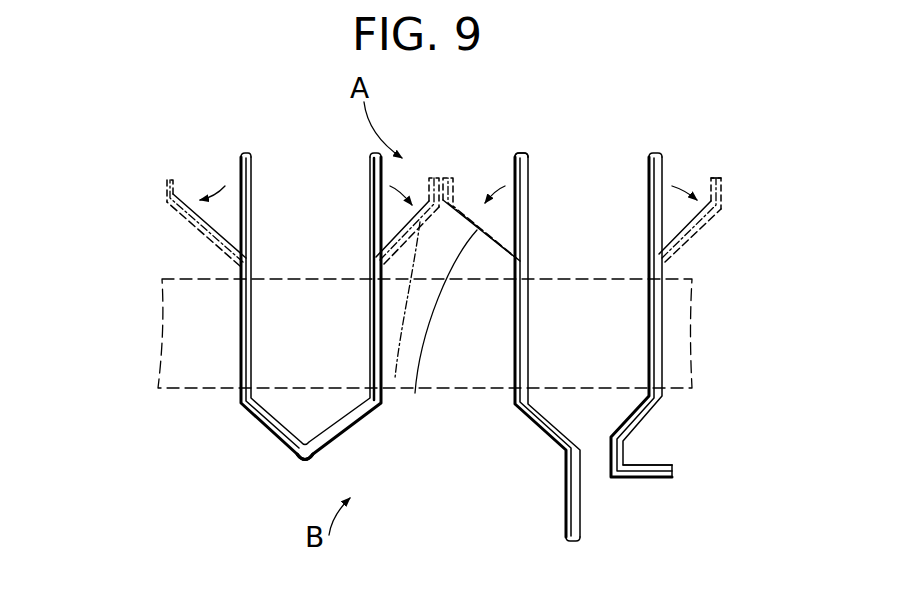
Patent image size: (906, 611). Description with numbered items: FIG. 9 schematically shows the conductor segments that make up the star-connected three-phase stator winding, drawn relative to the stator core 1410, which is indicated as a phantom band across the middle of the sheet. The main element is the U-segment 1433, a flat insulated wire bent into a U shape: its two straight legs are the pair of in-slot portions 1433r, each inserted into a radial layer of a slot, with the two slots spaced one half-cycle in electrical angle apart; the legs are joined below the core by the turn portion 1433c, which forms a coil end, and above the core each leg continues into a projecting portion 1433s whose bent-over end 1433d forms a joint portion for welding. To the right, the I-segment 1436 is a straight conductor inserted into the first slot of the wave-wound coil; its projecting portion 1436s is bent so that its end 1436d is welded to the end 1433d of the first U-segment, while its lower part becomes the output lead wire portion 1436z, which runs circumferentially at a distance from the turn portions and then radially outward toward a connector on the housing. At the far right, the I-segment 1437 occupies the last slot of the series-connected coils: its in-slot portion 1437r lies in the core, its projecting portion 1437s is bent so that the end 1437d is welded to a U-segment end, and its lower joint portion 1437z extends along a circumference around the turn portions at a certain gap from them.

The stator core 1410 is at (675, 320).
The U-segment 1433 is at (247, 449).
The projecting portion 1433s is at (195, 227).
The in-slot portion 1433r is at (368, 318).
The end of projecting portion 1433d is at (471, 136).
The turn portion 1433c is at (278, 445).
The I-segment 1436 is at (514, 313).
The end of projecting portion 1436d is at (536, 136).
The projecting portion 1436s is at (480, 233).
The output lead wire portion 1436z is at (577, 523).
The I-segment 1437 is at (645, 314).
The end 1437d is at (714, 176).
The projecting portion 1437s is at (708, 226).
The in-slot portion 1437r is at (662, 342).
The joint portion 1437z is at (662, 472).